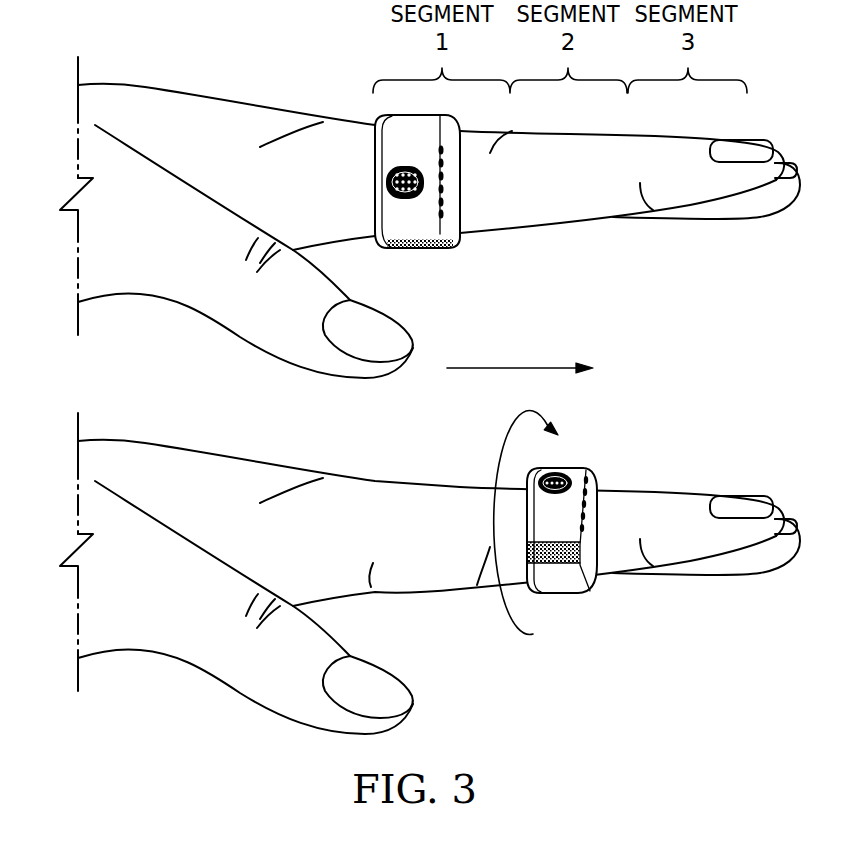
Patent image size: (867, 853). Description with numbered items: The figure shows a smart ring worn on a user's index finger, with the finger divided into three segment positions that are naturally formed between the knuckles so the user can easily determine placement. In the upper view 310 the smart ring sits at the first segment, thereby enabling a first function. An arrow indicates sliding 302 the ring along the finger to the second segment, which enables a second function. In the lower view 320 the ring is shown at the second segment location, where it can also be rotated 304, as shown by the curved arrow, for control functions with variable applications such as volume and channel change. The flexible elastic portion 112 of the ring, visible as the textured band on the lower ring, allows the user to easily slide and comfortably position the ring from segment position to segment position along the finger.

The flexible elastic portion 112 is at (586, 572).
The sliding 302 is at (518, 368).
The rotation 304 is at (503, 443).
The view 310 is at (673, 317).
The view 320 is at (714, 683).